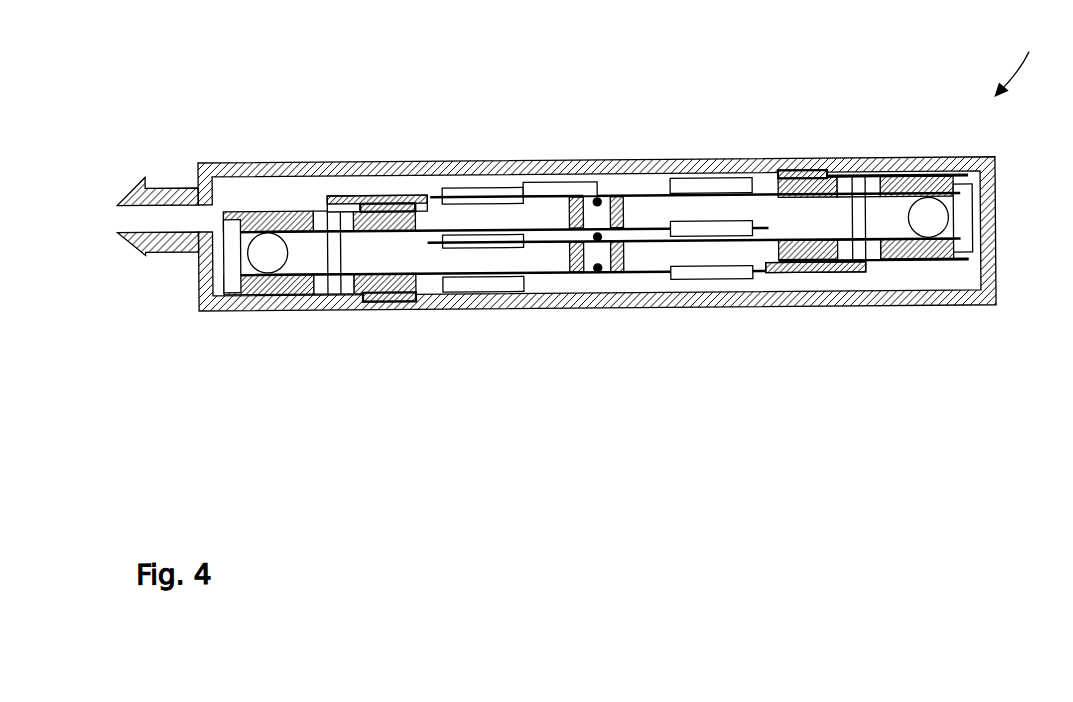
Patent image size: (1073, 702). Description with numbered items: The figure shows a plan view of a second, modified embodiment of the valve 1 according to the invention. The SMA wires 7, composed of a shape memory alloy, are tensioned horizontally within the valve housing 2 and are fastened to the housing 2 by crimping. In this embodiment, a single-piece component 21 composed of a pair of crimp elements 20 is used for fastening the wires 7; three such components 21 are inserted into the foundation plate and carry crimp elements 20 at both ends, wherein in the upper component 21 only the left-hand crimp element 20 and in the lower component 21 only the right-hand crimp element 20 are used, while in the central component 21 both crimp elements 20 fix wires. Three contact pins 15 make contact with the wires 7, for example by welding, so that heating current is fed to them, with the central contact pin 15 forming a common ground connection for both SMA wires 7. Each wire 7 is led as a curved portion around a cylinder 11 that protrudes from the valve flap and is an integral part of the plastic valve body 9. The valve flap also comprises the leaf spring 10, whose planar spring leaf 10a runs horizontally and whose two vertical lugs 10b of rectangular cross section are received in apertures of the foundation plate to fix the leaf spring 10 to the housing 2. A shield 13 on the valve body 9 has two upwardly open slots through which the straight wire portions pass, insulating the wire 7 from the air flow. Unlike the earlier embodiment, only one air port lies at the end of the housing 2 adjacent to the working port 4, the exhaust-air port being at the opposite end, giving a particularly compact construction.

The adjusting device 1 is at (1018, 60).
The housing 2 is at (775, 309).
The working port 4 is at (120, 217).
The SMA wire 7 is at (540, 199).
The valve body 9 is at (223, 254).
The leaf spring 10 is at (287, 212).
The spring leaf 10a is at (252, 212).
The lugs 10b is at (398, 205).
The cylinder 11 is at (267, 264).
The shield 13 is at (335, 259).
The contact pins 15 is at (597, 204).
The crimp elements 20 is at (462, 191).
The single-piece component 21 is at (650, 199).